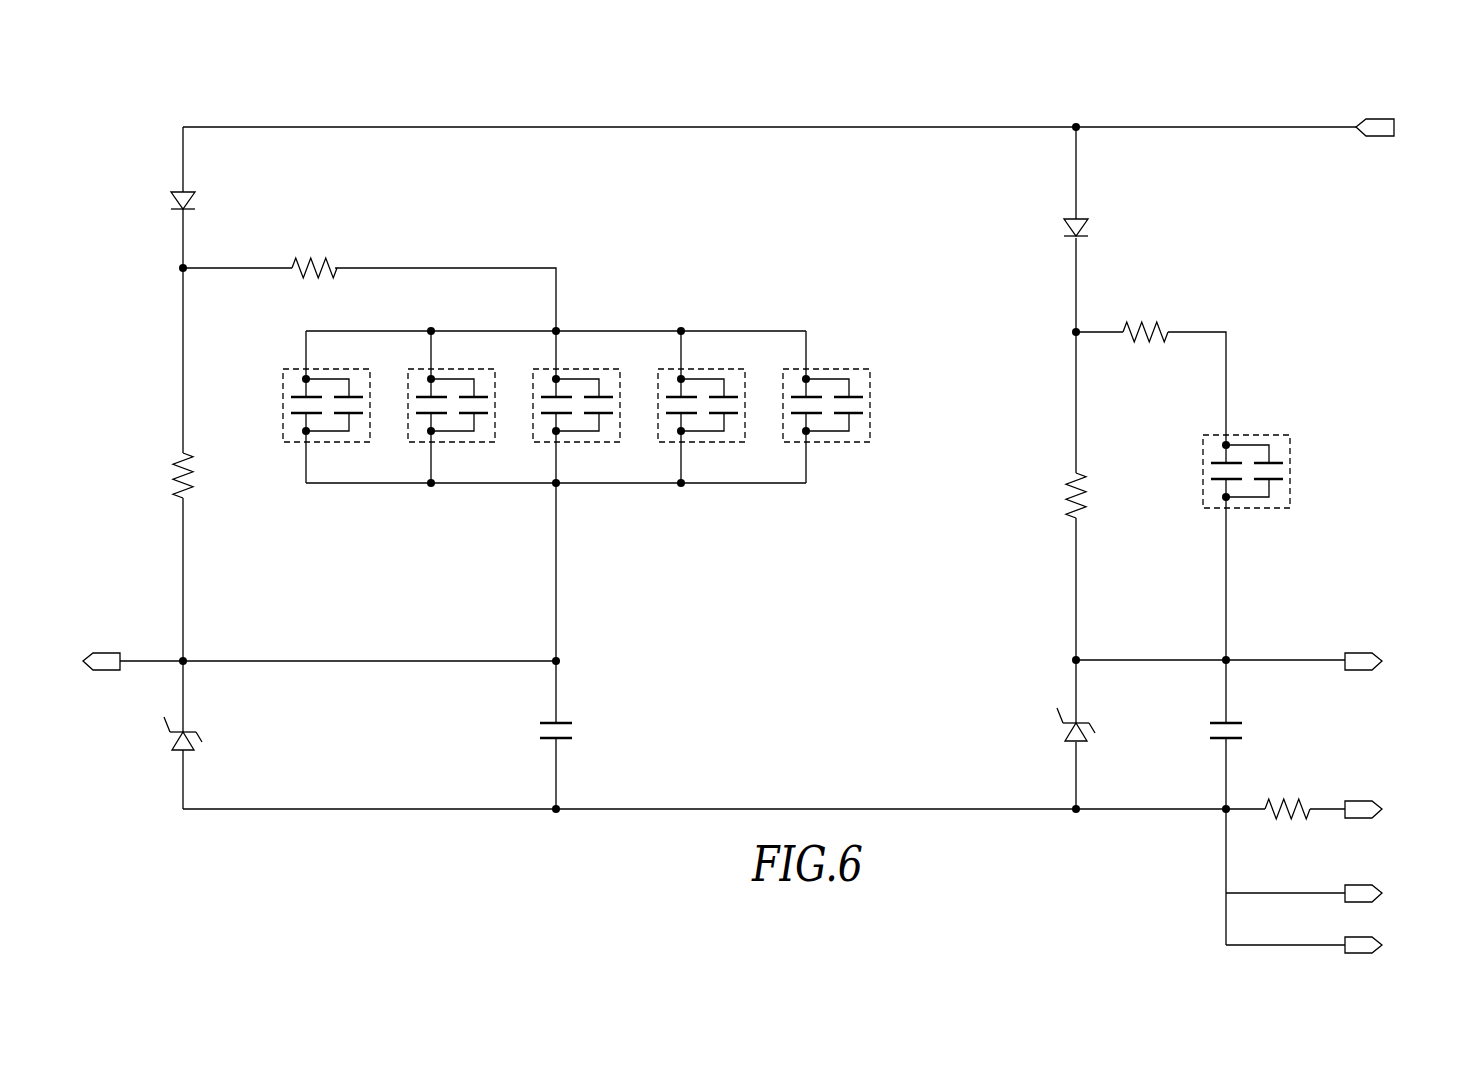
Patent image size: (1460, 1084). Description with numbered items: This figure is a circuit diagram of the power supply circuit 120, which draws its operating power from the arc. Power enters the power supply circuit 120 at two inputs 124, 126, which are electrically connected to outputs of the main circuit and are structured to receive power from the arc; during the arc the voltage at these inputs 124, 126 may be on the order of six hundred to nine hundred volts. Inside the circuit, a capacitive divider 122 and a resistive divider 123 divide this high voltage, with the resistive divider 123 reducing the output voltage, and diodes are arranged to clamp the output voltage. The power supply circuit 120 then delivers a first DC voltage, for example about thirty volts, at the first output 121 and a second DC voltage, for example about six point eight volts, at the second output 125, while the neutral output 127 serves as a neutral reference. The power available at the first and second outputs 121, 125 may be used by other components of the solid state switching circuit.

The power supply circuit 120 is at (211, 80).
The first output 121 is at (106, 650).
The capacitive divider 122 is at (628, 492).
The resistive divider 123 is at (1058, 482).
The input 124 is at (1366, 108).
The second output 125 is at (1357, 646).
The input 126 is at (1360, 796).
The neutral output 127 is at (1380, 938).